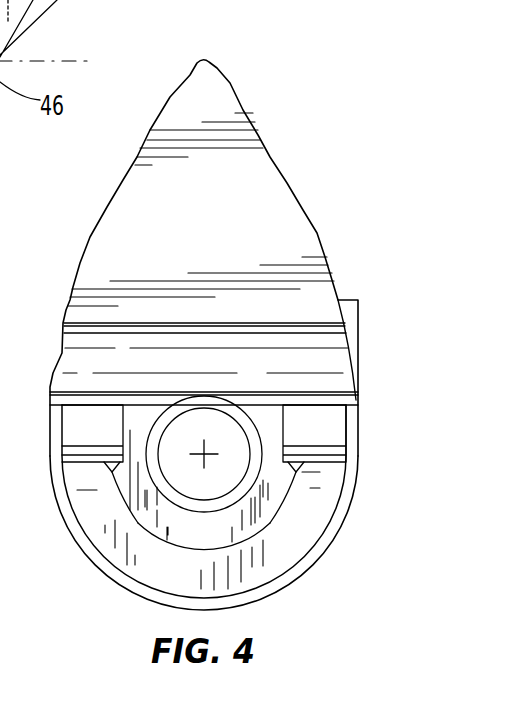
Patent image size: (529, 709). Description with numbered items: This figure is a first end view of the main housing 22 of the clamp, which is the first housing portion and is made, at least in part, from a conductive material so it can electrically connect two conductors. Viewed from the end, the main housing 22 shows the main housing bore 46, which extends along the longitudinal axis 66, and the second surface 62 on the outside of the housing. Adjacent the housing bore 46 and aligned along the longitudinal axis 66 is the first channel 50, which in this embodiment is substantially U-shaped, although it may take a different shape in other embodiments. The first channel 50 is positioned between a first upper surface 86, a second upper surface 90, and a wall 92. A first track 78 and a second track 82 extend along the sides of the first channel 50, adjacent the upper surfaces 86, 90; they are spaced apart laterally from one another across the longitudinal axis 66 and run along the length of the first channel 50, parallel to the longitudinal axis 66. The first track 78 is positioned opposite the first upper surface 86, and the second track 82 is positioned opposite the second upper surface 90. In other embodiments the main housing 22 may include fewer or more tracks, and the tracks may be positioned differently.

The main housing 22 is at (267, 79).
The main housing bore 46 is at (232, 470).
The first channel 50 is at (269, 536).
The second surface 62 is at (323, 362).
The longitudinal axis 66 is at (201, 460).
The first track 78 is at (294, 473).
The second track 82 is at (112, 470).
The first upper surface 86 is at (333, 406).
The second upper surface 90 is at (72, 407).
The wall 92 is at (184, 527).